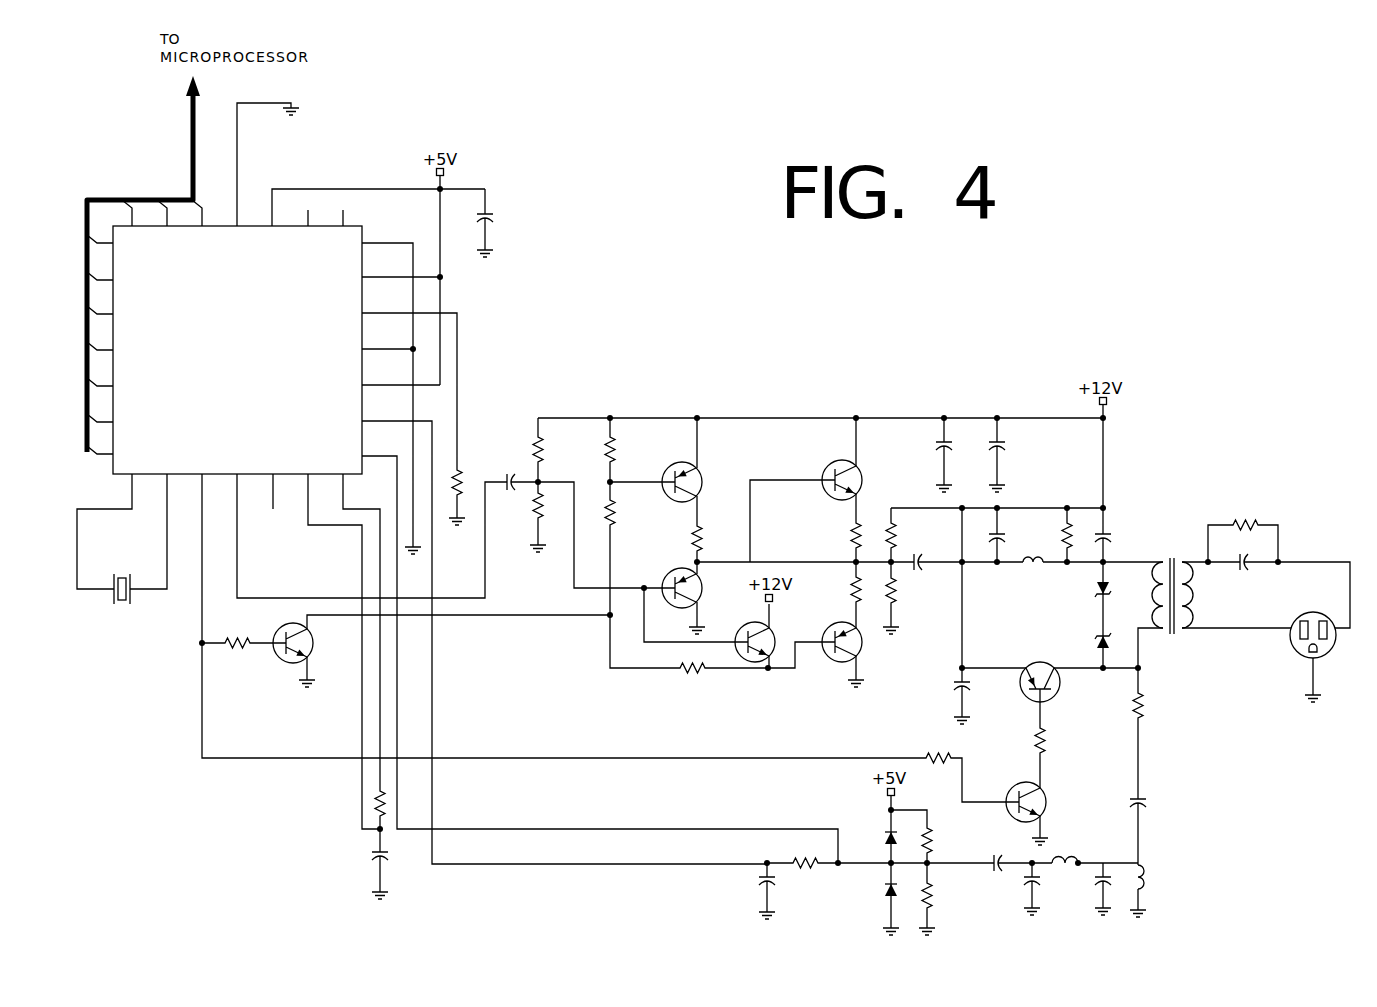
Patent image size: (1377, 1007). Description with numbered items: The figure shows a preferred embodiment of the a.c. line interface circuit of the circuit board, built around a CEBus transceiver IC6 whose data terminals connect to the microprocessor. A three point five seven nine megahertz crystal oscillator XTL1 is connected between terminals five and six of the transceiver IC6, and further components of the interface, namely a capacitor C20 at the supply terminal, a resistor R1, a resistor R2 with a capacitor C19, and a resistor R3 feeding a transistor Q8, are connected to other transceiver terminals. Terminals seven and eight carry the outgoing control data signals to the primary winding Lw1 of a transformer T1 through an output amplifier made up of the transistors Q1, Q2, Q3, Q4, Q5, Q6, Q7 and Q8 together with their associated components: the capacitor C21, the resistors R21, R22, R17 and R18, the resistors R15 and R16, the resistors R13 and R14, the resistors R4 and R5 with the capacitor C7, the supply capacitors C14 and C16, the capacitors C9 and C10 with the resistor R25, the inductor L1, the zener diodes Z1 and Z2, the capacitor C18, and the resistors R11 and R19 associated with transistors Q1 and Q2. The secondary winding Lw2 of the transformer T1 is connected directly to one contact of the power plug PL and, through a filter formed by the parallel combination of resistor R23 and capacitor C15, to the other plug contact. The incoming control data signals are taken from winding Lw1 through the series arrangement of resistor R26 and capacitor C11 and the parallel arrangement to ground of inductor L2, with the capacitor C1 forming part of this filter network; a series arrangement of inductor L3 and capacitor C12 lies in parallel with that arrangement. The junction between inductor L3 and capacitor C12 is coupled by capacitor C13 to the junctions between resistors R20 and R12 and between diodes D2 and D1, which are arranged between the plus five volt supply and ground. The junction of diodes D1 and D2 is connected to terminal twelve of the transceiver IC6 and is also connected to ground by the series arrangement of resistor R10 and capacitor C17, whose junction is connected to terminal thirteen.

The CEBus transceiver IC6 is at (224, 292).
The crystal oscillator XTL1 is at (122, 602).
The capacitor C20 is at (504, 223).
The resistor R1 is at (466, 482).
The resistor R2 is at (372, 810).
The resistor R3 is at (237, 633).
The transistor Q8 is at (309, 655).
The capacitor C19 is at (361, 864).
The capacitor C21 is at (579, 520).
The resistor R21 is at (557, 441).
The resistor R22 is at (533, 517).
The resistor R17 is at (629, 441).
The resistor R18 is at (629, 512).
The resistor R16 is at (693, 678).
The resistor R15 is at (717, 538).
The transistor Q5 is at (698, 482).
The transistor Q6 is at (698, 601).
The transistor Q7 is at (770, 642).
The transistor Q3 is at (857, 480).
The transistor Q4 is at (857, 654).
The resistor R13 is at (839, 535).
The resistor R14 is at (839, 590).
The resistor R4 is at (903, 535).
The resistor R5 is at (905, 604).
The capacitor C7 is at (923, 553).
The capacitor C14 is at (926, 463).
The capacitor C16 is at (1016, 463).
The capacitor C9 is at (1011, 535).
The resistor R25 is at (1062, 533).
The capacitor C10 is at (1122, 538).
The zener diode Z1 is at (1090, 591).
The zener diode Z2 is at (1090, 642).
The inductor L1 is at (1033, 573).
The capacitor C18 is at (942, 699).
The transistor Q1 is at (1040, 673).
The transistor Q2 is at (1042, 813).
The resistor R11 is at (1058, 740).
The resistor R19 is at (939, 749).
The resistor R20 is at (945, 838).
The resistor R12 is at (944, 907).
The diode D1 is at (879, 908).
The diode D2 is at (878, 839).
The resistor R10 is at (805, 853).
The capacitor C17 is at (785, 894).
The capacitor C13 is at (997, 853).
The capacitor C12 is at (1015, 892).
The inductor L3 is at (1067, 846).
The capacitor C1 is at (1092, 892).
The inductor L2 is at (1151, 888).
The resistor R26 is at (1158, 705).
The capacitor C11 is at (1157, 802).
The transformer T1 is at (1177, 586).
The primary winding Lw1 is at (1154, 596).
The secondary winding Lw2 is at (1188, 596).
The resistor R23 is at (1246, 515).
The capacitor C15 is at (1245, 573).
The power plug PL is at (1292, 648).